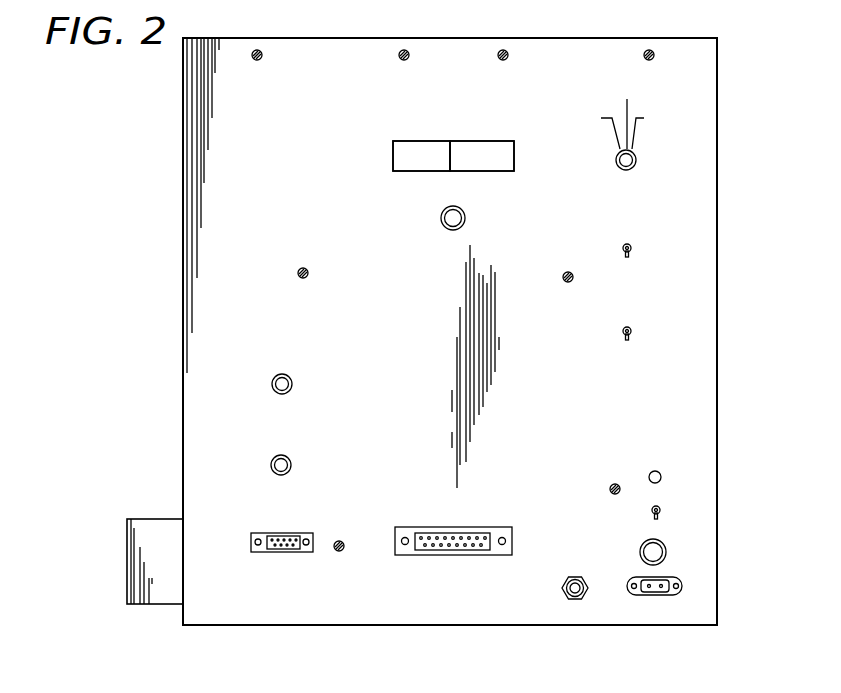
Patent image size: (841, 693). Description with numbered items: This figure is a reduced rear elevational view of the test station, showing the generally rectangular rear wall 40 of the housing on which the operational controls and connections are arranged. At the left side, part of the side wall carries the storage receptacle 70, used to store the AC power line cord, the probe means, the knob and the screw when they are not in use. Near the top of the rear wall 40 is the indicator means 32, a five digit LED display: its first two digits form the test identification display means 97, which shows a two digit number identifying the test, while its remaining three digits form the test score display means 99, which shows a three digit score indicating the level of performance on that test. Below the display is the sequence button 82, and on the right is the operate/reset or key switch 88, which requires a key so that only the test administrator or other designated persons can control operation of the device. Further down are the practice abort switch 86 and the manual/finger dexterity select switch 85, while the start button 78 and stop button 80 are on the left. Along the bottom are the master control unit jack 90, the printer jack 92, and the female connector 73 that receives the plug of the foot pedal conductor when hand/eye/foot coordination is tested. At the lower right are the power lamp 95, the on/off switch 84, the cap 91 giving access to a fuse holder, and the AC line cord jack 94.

The rear wall 40 is at (640, 396).
The storage receptacle 70 is at (158, 528).
The test identification display means 97 is at (393, 152).
The test score display means 99 is at (492, 171).
The indicator means 32 is at (445, 174).
The sequence button 82 is at (444, 231).
The operate/reset switch 88 is at (637, 160).
The practice abort switch 86 is at (634, 249).
The manual/finger dexterity select switch 85 is at (634, 333).
The start button 78 is at (293, 384).
The stop button 80 is at (292, 465).
The master control unit jack 90 is at (275, 552).
The printer jack 92 is at (458, 551).
The female connector 73 is at (561, 587).
The power lamp 95 is at (649, 478).
The on/off switch 84 is at (662, 512).
The cap 91 is at (666, 552).
The AC line cord jack 94 is at (680, 590).